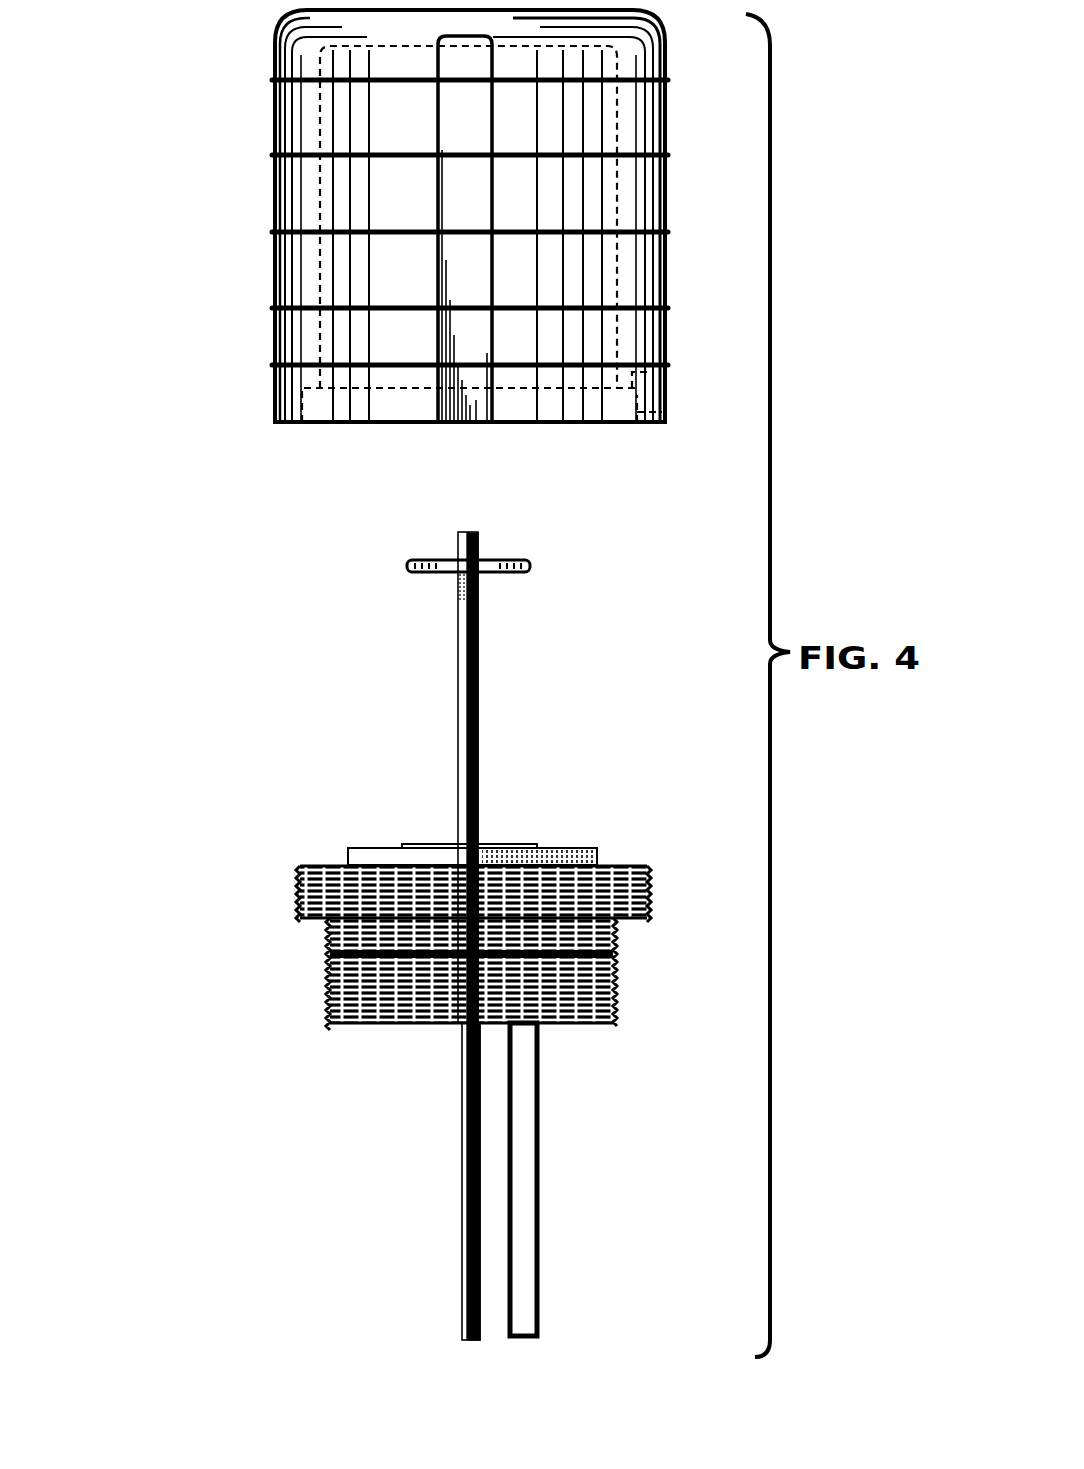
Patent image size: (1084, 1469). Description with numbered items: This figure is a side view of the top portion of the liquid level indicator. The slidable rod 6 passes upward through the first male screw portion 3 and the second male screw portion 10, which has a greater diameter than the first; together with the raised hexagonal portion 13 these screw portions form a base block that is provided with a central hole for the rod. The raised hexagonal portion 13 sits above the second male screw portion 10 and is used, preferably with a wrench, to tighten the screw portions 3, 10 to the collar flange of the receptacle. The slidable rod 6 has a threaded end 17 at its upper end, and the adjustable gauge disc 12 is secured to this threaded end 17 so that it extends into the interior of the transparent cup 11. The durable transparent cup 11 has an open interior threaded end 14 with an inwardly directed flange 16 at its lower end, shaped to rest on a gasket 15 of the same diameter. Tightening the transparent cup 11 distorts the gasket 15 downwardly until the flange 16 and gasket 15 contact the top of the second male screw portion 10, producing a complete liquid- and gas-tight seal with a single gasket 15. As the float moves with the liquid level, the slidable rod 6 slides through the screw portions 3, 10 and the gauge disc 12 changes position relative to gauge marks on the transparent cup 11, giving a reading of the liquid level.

The transparent cup 11 is at (277, 115).
The gasket 15 is at (512, 388).
The inwardly directed flange 16 is at (657, 362).
The open interior threaded end 14 is at (662, 412).
The gauge disc 12 is at (410, 560).
The threaded end 17 is at (458, 583).
The slidable rod 6 is at (478, 705).
The raised hexagonal portion 13 is at (378, 855).
The second male screw portion 10 is at (315, 918).
The first male screw portion 3 is at (608, 1005).